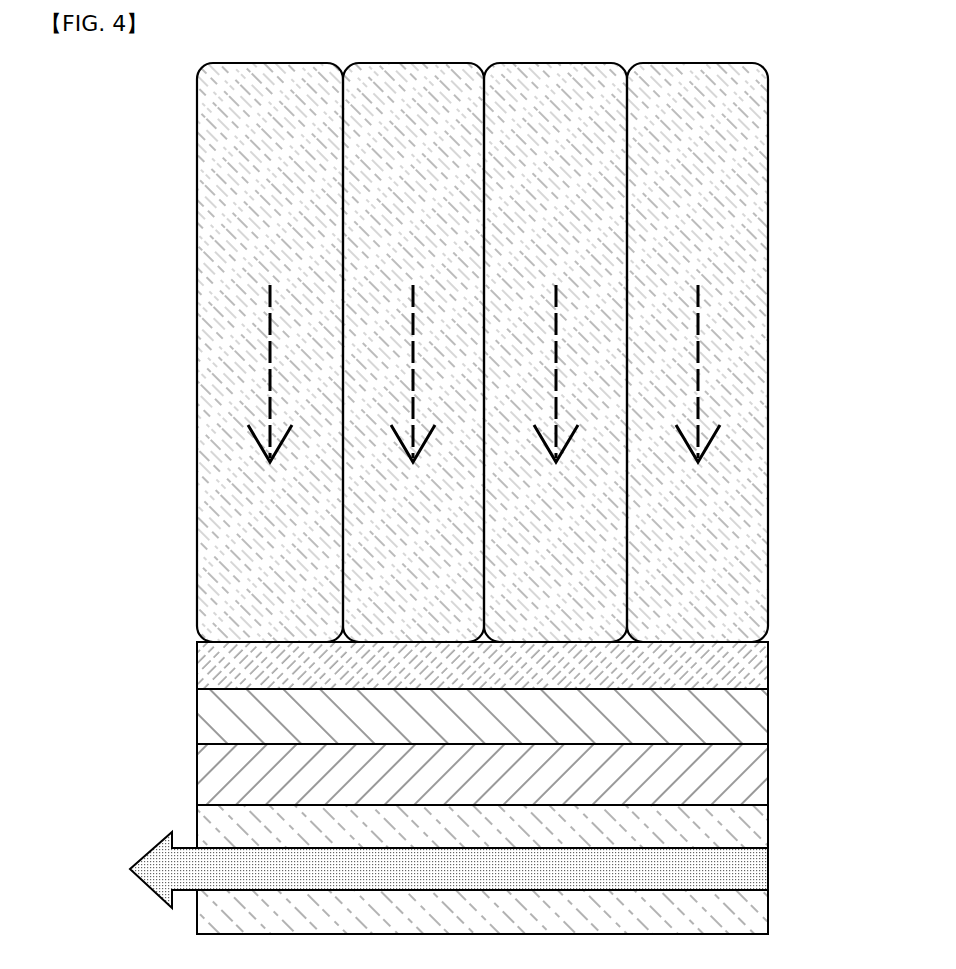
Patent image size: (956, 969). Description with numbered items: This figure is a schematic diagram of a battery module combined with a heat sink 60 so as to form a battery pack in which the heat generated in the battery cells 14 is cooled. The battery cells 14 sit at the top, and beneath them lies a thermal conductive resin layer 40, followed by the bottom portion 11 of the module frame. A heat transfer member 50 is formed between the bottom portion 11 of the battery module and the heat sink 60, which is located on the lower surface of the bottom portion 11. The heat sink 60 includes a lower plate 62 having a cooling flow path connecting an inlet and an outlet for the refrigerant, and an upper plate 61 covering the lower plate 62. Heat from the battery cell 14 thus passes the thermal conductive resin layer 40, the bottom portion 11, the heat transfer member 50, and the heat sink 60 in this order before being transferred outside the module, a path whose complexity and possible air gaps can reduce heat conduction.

The battery cell 14 is at (735, 178).
The thermal conductive resin layer 40 is at (752, 664).
The bottom portion 11 is at (752, 716).
The heat transfer member 50 is at (752, 775).
The heat sink 60 is at (517, 869).
The upper plate 61 is at (752, 826).
The lower plate 62 is at (526, 912).